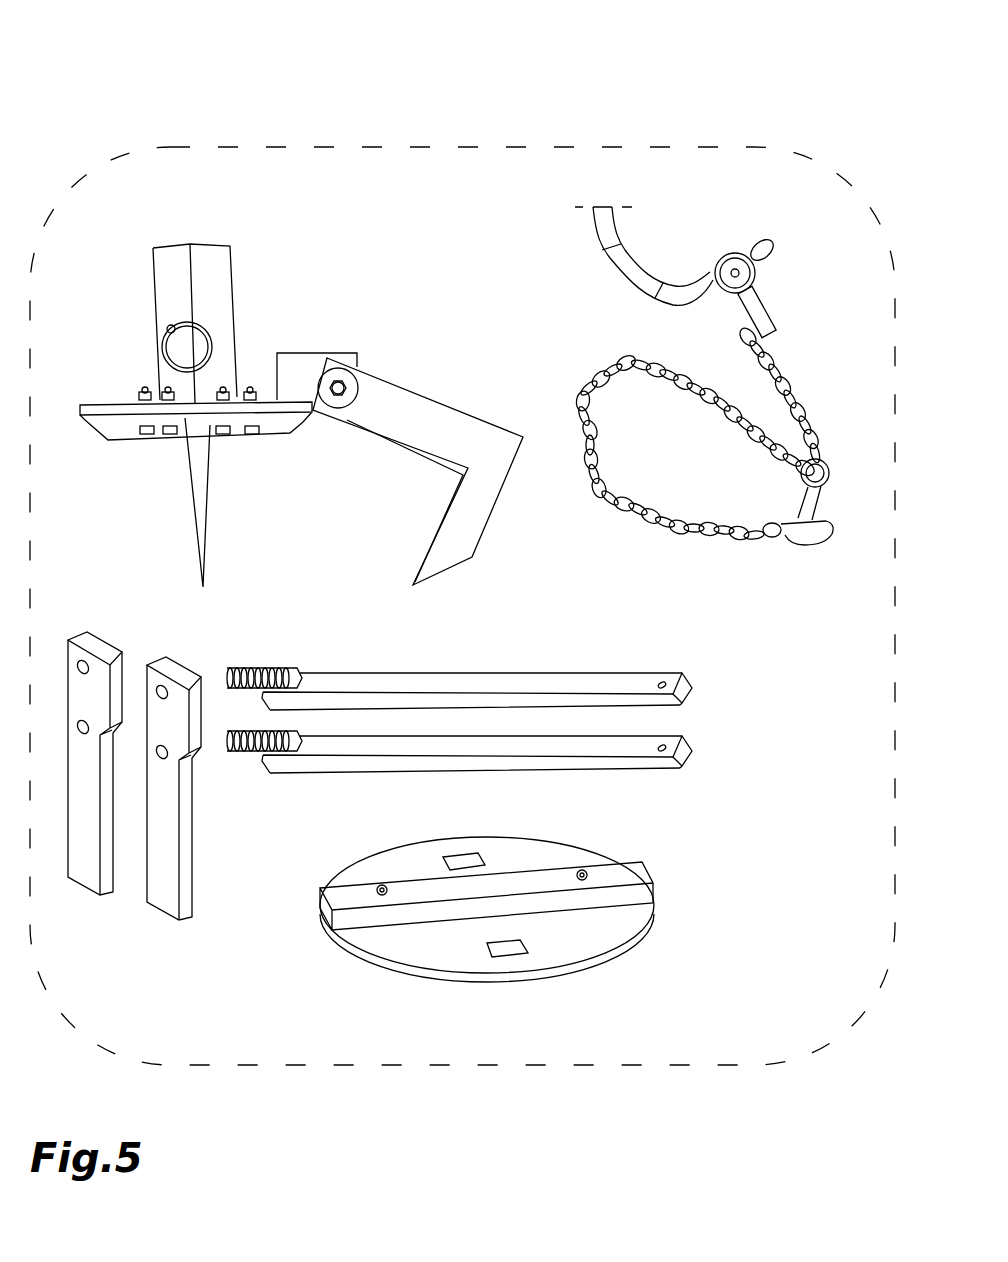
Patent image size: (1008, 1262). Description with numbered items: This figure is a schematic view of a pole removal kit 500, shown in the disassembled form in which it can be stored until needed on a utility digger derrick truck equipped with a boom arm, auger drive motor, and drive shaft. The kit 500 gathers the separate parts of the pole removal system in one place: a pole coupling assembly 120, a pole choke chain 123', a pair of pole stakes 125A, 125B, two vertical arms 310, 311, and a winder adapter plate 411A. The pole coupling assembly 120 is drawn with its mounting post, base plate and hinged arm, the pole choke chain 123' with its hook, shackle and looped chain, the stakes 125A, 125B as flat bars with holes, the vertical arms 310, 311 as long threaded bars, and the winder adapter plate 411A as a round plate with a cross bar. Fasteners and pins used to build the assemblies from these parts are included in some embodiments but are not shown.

The pole removal kit 500 is at (519, 146).
The pole coupling assembly 120 is at (213, 237).
The pole choke chain 123' is at (657, 364).
The pole stake 125A is at (90, 633).
The pole stake 125B is at (165, 665).
The vertical arm 310 is at (670, 673).
The vertical arm 311 is at (678, 740).
The winder adapter plate 411A is at (550, 853).